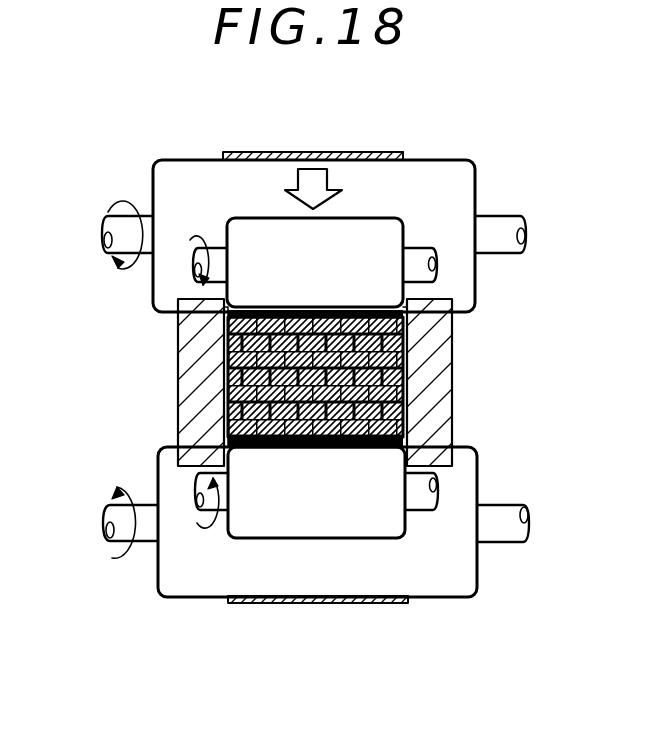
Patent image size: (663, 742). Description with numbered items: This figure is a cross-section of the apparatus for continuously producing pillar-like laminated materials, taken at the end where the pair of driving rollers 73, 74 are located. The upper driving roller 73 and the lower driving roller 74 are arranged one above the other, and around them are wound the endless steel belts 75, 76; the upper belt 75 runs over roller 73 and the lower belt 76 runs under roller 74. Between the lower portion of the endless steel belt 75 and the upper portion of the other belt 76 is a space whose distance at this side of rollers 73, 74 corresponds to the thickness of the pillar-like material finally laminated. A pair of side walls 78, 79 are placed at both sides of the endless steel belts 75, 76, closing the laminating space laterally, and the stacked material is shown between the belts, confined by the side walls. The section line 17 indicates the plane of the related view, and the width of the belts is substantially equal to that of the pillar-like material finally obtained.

The section line 17- 17 is at (317, 135).
The driving roller 73 is at (475, 178).
The driving roller 74 is at (477, 572).
The endless steel belt 75 is at (380, 152).
The endless steel belt 76 is at (390, 604).
The side wall 78 is at (178, 368).
The side wall 79 is at (452, 370).